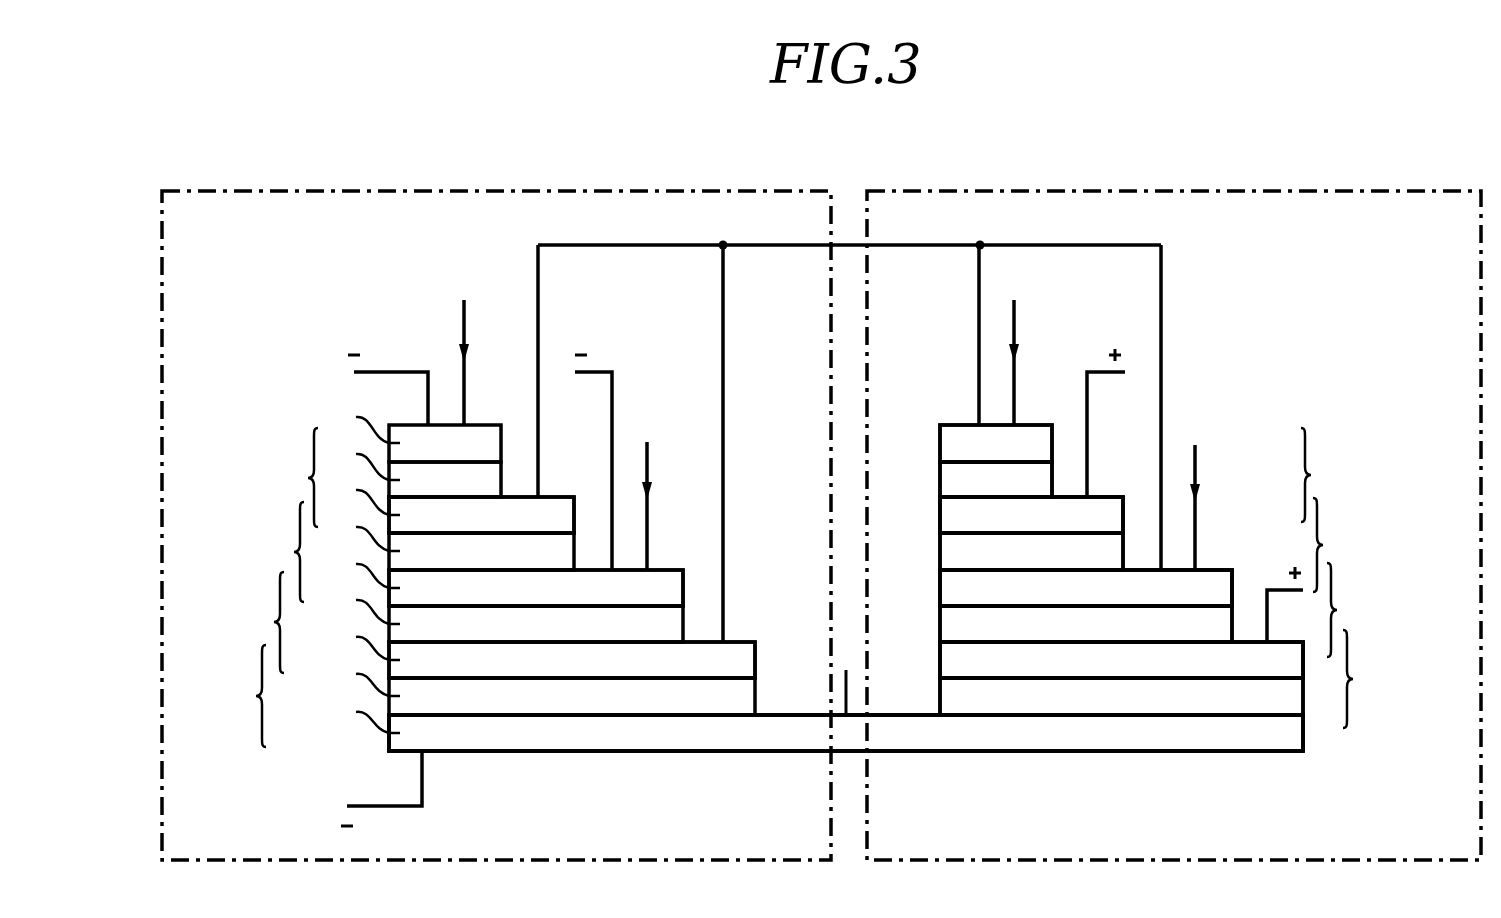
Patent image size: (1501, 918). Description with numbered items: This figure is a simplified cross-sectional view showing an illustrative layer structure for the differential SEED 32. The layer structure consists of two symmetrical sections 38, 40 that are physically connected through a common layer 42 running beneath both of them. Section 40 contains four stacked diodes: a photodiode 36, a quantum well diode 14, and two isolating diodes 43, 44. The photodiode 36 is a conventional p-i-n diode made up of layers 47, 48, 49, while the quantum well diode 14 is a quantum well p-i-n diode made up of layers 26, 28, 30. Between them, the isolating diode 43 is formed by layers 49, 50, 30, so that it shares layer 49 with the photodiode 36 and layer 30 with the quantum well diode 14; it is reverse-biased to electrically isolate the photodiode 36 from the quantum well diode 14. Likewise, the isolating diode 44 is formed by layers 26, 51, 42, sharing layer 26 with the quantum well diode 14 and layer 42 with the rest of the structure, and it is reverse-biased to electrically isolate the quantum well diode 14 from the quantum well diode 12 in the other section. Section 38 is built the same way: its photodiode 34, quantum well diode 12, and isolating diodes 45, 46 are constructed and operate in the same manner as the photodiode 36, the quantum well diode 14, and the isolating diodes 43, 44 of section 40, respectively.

The differential SEED 32 is at (873, 135).
The first symmetrical section 38 is at (383, 207).
The second symmetrical section 40 is at (1318, 209).
The photodiode 34 is at (308, 478).
The isolating diode 45 is at (294, 552).
The quantum well diode 12 is at (274, 622).
The isolating diode 46 is at (256, 696).
The common layer 42 is at (569, 740).
The layer 47 is at (952, 443).
The layer 48 is at (952, 480).
The layer 49 is at (952, 515).
The layer 50 is at (952, 551).
The layer 30 is at (952, 588).
The layer 28 is at (952, 624).
The layer 26 is at (952, 660).
The layer 51 is at (952, 696).
The photodiode 36 is at (1311, 475).
The isolating diode 43 is at (1323, 545).
The quantum well diode 14 is at (1337, 610).
The isolating diode 44 is at (1353, 679).